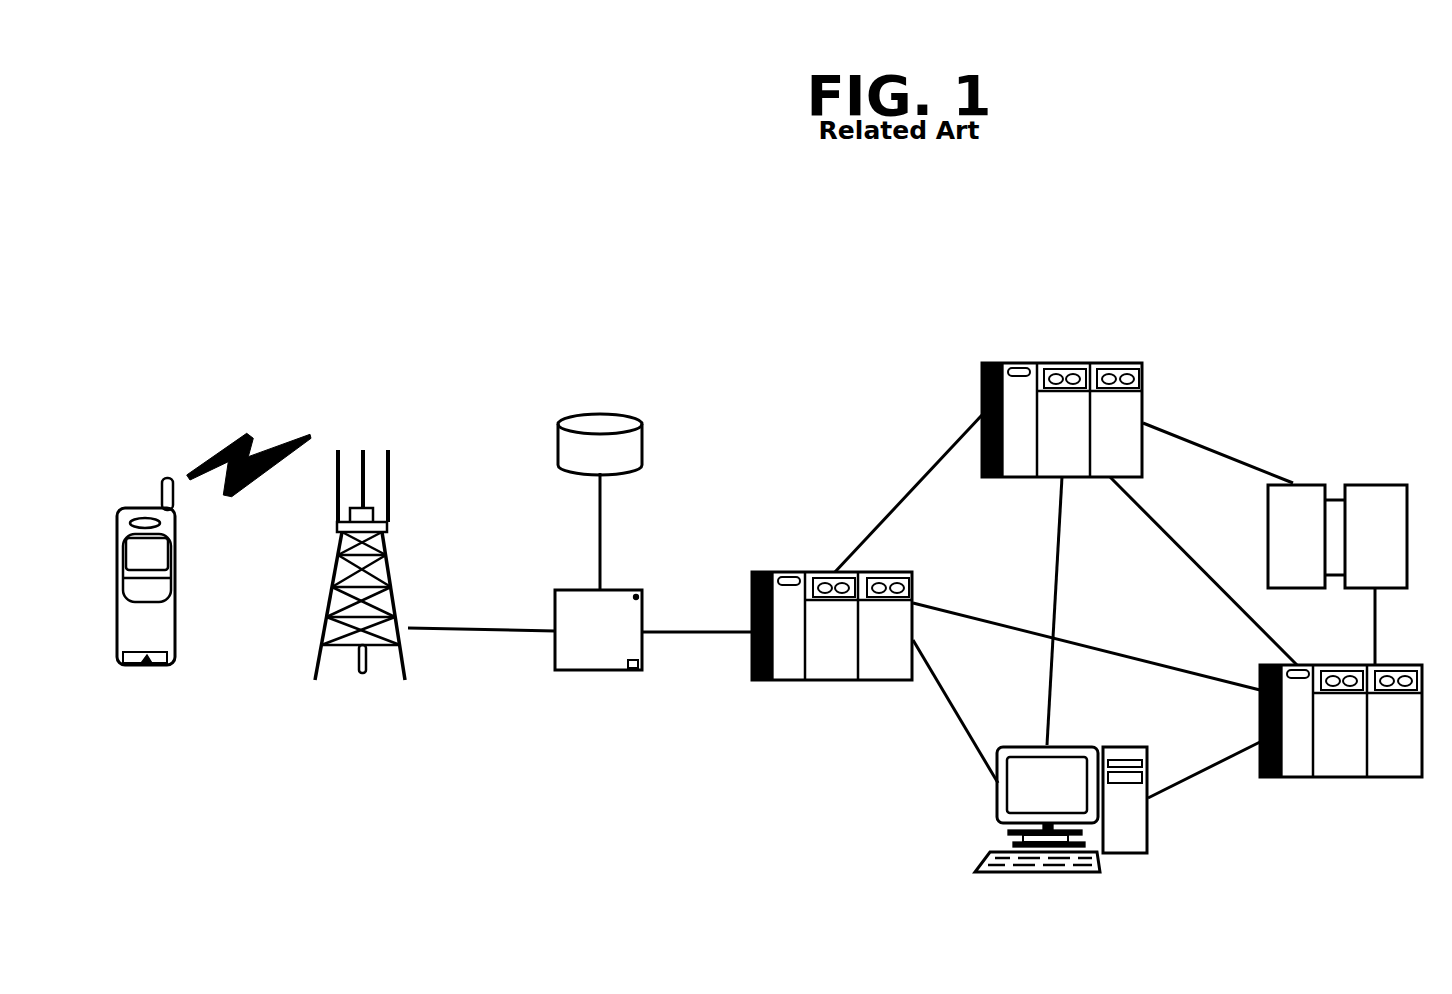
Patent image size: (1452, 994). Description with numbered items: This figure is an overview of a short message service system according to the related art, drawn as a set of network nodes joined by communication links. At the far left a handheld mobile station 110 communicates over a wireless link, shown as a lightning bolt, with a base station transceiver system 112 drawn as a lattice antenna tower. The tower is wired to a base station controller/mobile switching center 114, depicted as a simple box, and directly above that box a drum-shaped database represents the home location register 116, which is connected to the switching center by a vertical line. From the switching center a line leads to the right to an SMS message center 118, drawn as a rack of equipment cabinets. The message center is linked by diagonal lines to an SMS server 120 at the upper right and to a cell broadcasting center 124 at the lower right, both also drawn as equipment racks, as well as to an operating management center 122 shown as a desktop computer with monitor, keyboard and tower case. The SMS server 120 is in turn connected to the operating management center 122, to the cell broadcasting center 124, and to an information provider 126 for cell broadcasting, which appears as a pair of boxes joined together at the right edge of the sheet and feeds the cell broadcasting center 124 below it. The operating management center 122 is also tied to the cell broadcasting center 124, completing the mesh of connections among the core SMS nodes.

The mobile station (MS) 110 is at (147, 507).
The base station transceiver system (BTS) 112 is at (390, 558).
The base station controller (BSC)/mobile switching center (MSC) 114 is at (620, 588).
The home location register (HLR) 116 is at (597, 412).
The SMS message center (SMC) 118 is at (803, 570).
The SMS server 120 is at (1063, 363).
The operating management center (OMC) 122 is at (1148, 840).
The cell broadcasting center (CBS) 124 is at (1412, 665).
The information provider (IP) 126 is at (1375, 485).